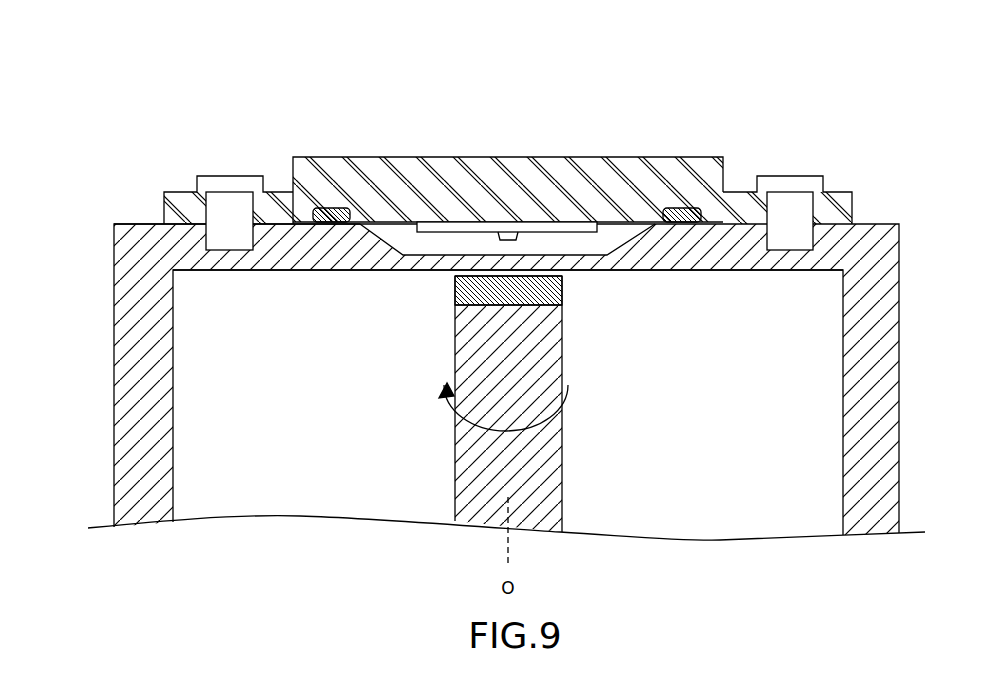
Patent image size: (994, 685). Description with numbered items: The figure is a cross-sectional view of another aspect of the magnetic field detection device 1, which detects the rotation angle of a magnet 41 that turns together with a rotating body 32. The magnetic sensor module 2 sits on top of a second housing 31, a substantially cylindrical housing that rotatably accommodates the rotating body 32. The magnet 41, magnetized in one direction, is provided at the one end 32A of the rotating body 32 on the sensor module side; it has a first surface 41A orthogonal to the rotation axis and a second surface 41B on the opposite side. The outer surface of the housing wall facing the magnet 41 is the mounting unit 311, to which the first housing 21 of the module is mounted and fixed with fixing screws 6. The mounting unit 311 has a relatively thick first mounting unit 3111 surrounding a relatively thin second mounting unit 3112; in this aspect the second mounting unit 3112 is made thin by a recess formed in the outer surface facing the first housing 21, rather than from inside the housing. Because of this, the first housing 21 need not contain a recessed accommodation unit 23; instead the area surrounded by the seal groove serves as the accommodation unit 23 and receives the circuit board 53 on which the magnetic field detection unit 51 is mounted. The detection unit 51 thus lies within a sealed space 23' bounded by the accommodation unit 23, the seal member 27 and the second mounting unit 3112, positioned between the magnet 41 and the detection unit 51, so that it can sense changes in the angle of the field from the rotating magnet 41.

The magnetic field detection device 1 is at (790, 99).
The magnetic sensor module 2 is at (395, 158).
The first housing 21 is at (653, 167).
The accommodation unit 23 is at (508, 165).
The sealed space 23' is at (351, 181).
The seal member 27 is at (318, 208).
The second housing 31 is at (135, 413).
The mounting unit 311 is at (548, 255).
The first mounting unit 3111 is at (220, 252).
The second mounting unit 3112 is at (445, 272).
The rotating body 32 is at (527, 502).
The one end 32A is at (455, 300).
The magnet 41 is at (562, 290).
The first surface 41A is at (455, 277).
The second surface 41B is at (562, 313).
The magnetic field detection unit 51 is at (497, 245).
The circuit board 53 is at (543, 222).
The fixing screw 6 is at (223, 190).